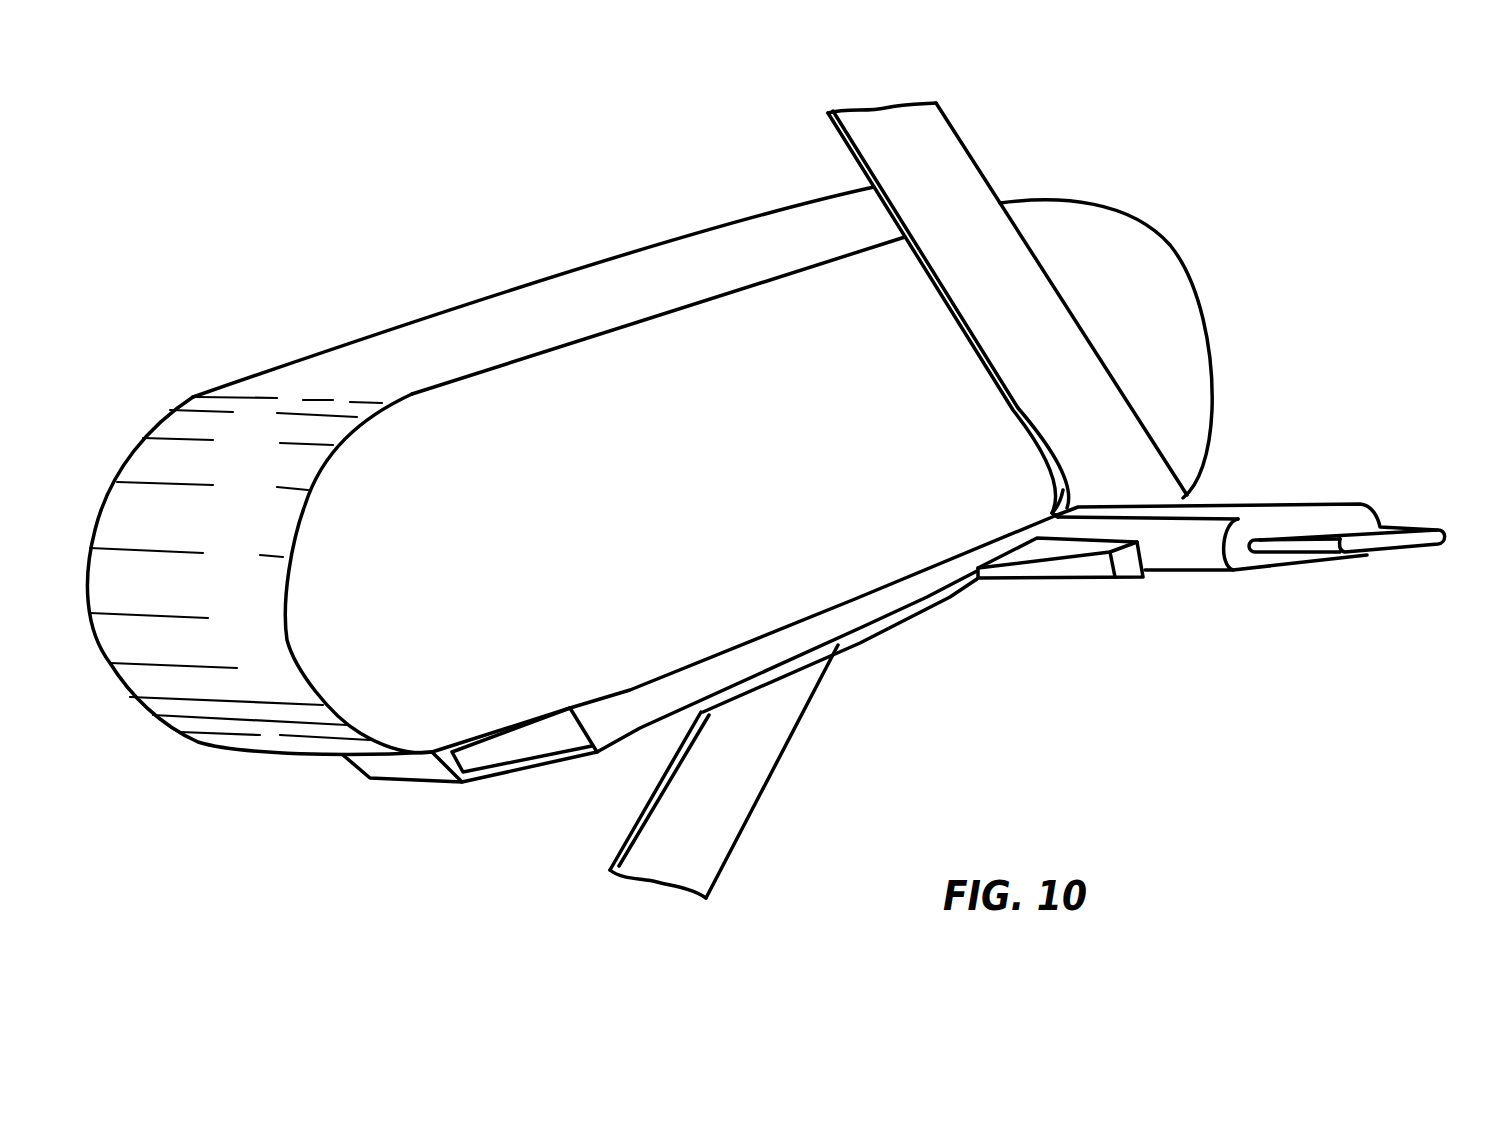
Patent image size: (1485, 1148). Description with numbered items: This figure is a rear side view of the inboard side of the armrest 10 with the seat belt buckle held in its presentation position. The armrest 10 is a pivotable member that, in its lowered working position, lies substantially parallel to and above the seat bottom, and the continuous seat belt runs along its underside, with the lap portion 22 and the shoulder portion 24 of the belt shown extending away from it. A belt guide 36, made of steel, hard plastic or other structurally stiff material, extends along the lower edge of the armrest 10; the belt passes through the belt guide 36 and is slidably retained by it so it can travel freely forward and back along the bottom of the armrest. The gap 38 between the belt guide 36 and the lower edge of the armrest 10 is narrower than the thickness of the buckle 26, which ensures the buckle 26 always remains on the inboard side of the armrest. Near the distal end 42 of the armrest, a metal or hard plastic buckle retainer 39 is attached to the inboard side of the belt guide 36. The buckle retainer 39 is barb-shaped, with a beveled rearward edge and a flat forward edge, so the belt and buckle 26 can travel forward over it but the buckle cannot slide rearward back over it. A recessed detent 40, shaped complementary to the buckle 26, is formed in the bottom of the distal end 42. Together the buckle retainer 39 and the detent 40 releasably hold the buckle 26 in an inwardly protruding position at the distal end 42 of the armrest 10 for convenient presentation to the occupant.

The armrest 10 is at (671, 509).
The lap portion 22 is at (747, 782).
The shoulder portion 24 is at (960, 150).
The buckle 26 is at (1260, 562).
The belt guide 36 is at (512, 768).
The gap 38 is at (495, 737).
The buckle retainer 39 is at (1130, 570).
The recessed detent 40 is at (1049, 501).
The distal end 42 is at (1185, 313).